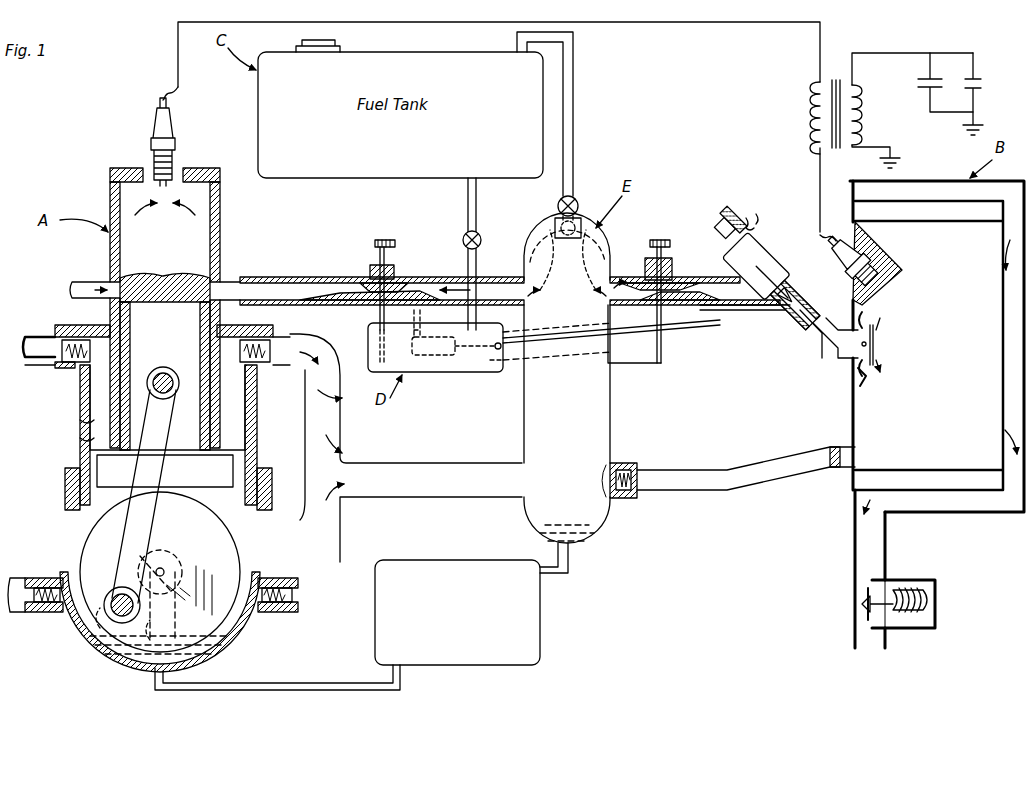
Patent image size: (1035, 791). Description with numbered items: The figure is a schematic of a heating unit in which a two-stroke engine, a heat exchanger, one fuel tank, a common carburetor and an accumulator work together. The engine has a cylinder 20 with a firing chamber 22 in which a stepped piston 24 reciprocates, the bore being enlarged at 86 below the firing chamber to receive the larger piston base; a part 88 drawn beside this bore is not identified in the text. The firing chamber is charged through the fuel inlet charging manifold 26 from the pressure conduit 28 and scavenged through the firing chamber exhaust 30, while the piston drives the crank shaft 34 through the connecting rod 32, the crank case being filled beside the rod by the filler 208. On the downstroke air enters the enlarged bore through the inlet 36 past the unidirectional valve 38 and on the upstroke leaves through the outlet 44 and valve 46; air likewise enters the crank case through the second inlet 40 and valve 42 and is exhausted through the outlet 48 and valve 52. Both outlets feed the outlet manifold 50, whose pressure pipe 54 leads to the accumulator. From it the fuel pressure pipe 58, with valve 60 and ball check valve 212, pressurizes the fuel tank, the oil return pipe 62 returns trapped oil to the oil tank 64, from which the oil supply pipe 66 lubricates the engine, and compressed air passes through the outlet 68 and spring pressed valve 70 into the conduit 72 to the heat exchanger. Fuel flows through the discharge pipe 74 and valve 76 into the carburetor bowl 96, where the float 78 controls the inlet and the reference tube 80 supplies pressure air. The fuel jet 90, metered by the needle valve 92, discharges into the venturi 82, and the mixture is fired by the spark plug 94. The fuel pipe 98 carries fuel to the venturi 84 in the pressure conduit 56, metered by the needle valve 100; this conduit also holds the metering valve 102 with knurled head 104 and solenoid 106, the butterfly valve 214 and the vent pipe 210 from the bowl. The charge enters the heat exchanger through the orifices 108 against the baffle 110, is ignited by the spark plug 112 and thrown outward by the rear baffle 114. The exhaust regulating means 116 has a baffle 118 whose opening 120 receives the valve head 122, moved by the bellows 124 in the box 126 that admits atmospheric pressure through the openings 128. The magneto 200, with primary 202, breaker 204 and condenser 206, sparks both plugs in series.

The cylinder 20 is at (110, 170).
The firing chamber 22 is at (130, 197).
The piston 24 is at (108, 318).
The fuel inlet charging manifold 26 is at (218, 282).
The pressure conduit 28 is at (335, 278).
The firing chamber exhaust 30 is at (90, 282).
The connecting rod 32 is at (160, 470).
The crank shaft 34 is at (197, 535).
The inlet 36 is at (40, 365).
The unidirectional valve 38 is at (68, 368).
The second inlet 40 is at (30, 578).
The unidirectional valve 42 is at (45, 612).
The outlet 44 is at (283, 368).
The valve 46 is at (258, 366).
The outlet 48 is at (292, 612).
The outlet manifold 50 is at (338, 442).
The unidirectional valve 52 is at (270, 577).
The pressure pipe 54 is at (432, 497).
The pressure conduit 56 is at (613, 280).
The fuel pressure pipe 58 is at (575, 72).
The valve 60 is at (576, 202).
The oil return pipe 62 is at (572, 572).
The oil tank 64 is at (452, 667).
The oil supply pipe 66 is at (298, 691).
The outlet 68 is at (632, 464).
The unidirectional spring pressed valve 70 is at (622, 498).
The conduit 72 is at (758, 480).
The discharge pipe 74 is at (478, 196).
The valve 76 is at (480, 238).
The float 78 is at (440, 356).
The reference tube 80 is at (422, 314).
The venturi 82 is at (400, 285).
The venturi 84 is at (680, 283).
The enlarged bore 86 is at (78, 420).
The piston ring 88 is at (78, 438).
The fuel jet 90 is at (378, 316).
The needle valve 92 is at (384, 239).
The spark plug 94 is at (158, 120).
The carburetor bowl 96 is at (472, 372).
The fuel pipe 98 is at (645, 364).
The needle valve 100 is at (658, 240).
The metering valve 102 is at (762, 268).
The knurled head 104 is at (716, 222).
The solenoid 106 is at (750, 218).
The orifices 108 is at (876, 345).
The baffle 110 is at (878, 360).
The spark plug 112 is at (840, 262).
The rear baffle 114 is at (868, 386).
The automatic exhaust regulating means 116 is at (937, 580).
The baffle 118 is at (860, 620).
The opening 120 is at (859, 602).
The valve head 122 is at (888, 588).
The bellows 124 is at (926, 604).
The box 126 is at (908, 630).
The openings 128 is at (869, 632).
The magneto 200 is at (804, 92).
The primary 202 is at (864, 90).
The breaker 204 is at (978, 84).
The condenser 206 is at (950, 74).
The filler 208 is at (215, 612).
The vent pipe 210 is at (690, 326).
The ball check valve 212 is at (564, 240).
The butterfly valve 214 is at (745, 312).